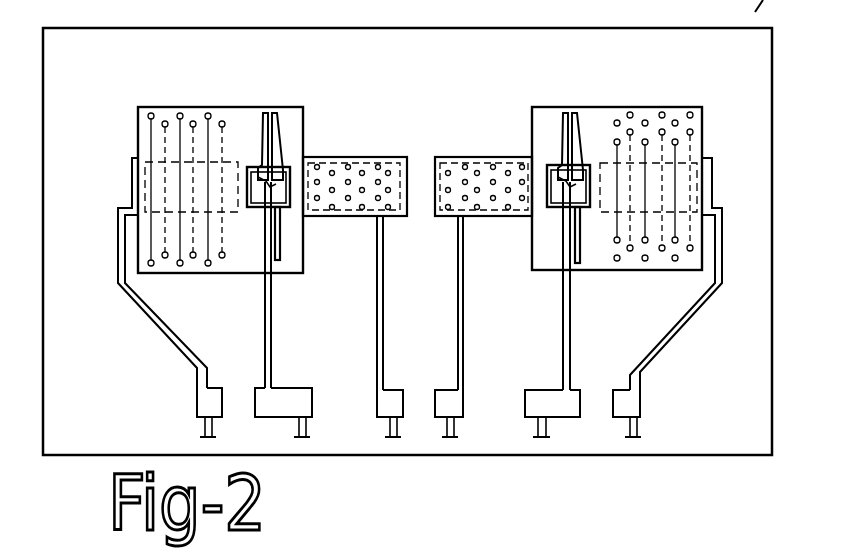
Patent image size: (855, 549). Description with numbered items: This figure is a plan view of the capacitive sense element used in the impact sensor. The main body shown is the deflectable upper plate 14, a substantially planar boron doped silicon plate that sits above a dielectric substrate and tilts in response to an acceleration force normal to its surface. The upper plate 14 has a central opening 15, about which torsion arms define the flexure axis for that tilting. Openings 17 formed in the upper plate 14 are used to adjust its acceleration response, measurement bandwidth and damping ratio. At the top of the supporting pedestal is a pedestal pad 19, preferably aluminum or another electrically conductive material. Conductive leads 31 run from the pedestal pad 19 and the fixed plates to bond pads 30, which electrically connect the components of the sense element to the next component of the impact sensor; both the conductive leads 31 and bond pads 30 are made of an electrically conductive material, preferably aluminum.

The deflectable upper plate 14 is at (242, 263).
The central opening 15 is at (291, 209).
The openings 17 is at (179, 268).
The pedestal pad 19 is at (260, 167).
The bond pads 30 is at (205, 395).
The conductive leads 31 is at (128, 295).